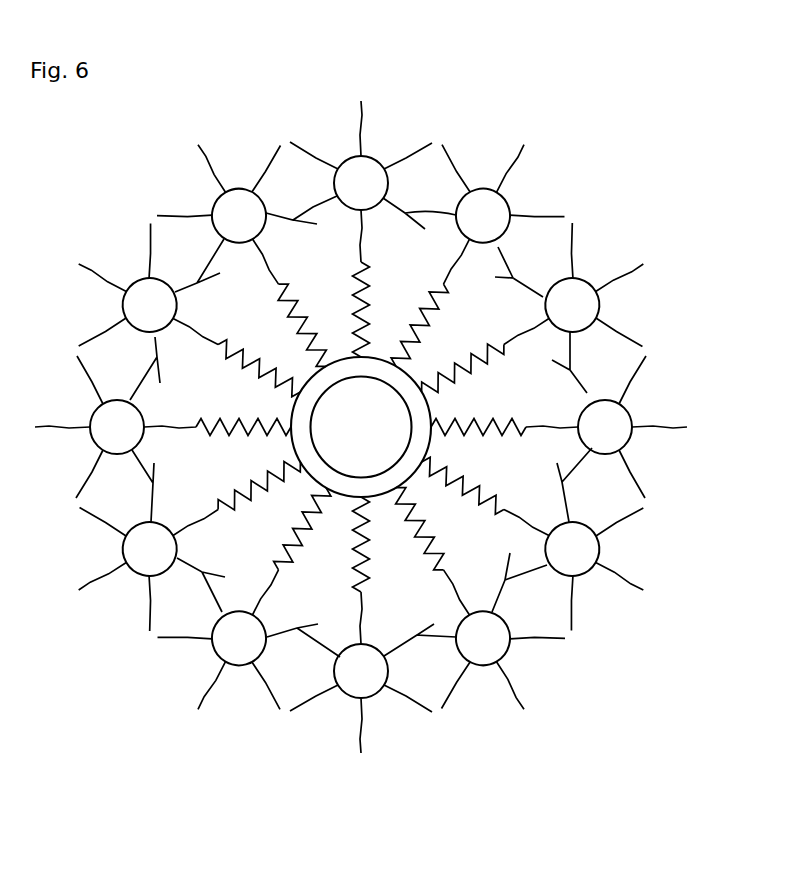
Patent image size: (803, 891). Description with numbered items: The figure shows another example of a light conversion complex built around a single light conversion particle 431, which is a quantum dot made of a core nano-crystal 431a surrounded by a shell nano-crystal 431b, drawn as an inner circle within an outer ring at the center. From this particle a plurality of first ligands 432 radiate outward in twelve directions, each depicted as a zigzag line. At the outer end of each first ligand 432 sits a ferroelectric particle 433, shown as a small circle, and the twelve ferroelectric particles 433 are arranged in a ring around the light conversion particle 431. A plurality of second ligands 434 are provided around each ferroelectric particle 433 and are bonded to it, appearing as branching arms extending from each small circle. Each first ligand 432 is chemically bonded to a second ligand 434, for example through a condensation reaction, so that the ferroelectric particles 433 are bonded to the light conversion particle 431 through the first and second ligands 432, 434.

The light conversion particle 431 is at (363, 602).
The core nano-crystal 431a is at (348, 448).
The shell nano-crystal 431b is at (377, 489).
The first ligand 432 is at (498, 427).
The ferroelectric particle 433 is at (623, 429).
The second ligand 434 is at (664, 428).